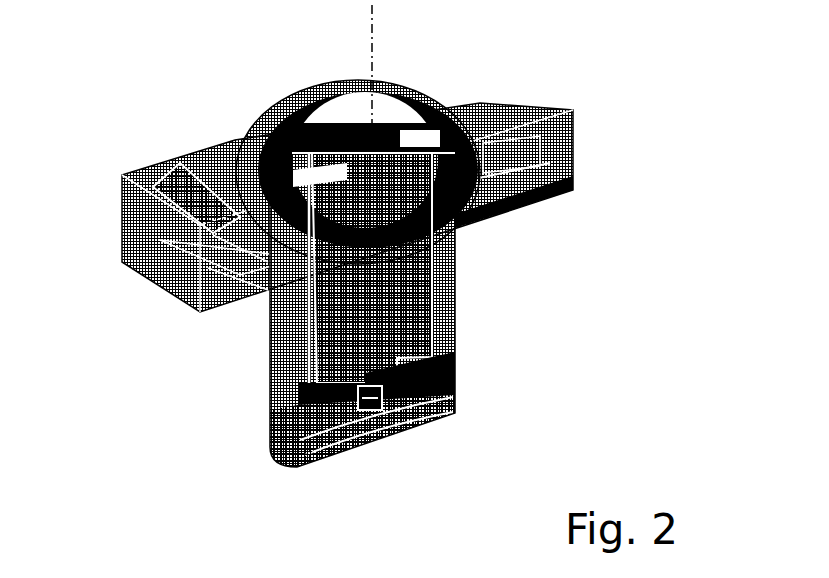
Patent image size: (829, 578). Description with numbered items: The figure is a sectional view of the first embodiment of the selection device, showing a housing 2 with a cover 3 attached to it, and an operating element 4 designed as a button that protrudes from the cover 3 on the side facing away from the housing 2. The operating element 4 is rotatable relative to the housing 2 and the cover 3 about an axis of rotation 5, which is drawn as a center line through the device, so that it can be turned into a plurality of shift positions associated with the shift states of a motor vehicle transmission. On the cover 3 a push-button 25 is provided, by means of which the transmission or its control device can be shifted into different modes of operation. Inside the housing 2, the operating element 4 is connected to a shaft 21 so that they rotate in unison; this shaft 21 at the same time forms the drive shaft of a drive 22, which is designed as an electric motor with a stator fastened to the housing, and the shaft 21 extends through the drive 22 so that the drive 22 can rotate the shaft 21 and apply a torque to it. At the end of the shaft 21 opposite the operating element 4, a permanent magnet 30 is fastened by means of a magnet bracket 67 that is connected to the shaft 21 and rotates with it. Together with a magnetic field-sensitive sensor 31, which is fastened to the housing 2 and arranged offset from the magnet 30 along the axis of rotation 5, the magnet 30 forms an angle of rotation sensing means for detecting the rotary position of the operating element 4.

The housing 2 is at (455, 385).
The cover 3 is at (515, 108).
The operating element 4 is at (275, 115).
The axis of rotation 5 is at (373, 42).
The shaft 21 is at (433, 420).
The drive 22 is at (455, 297).
The push-button 25 is at (183, 162).
The permanent magnet 30 is at (413, 433).
The magnetic field-sensitive sensor 31 is at (383, 427).
The magnet bracket 67 is at (320, 460).